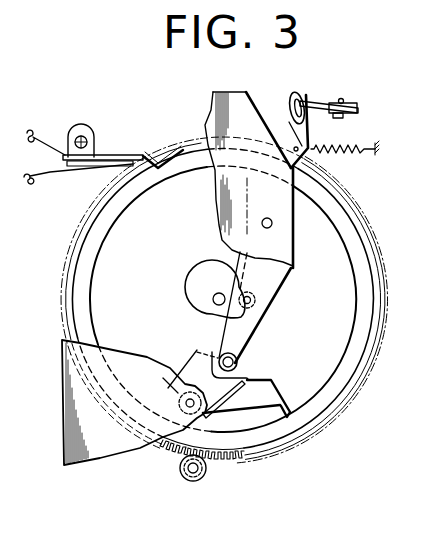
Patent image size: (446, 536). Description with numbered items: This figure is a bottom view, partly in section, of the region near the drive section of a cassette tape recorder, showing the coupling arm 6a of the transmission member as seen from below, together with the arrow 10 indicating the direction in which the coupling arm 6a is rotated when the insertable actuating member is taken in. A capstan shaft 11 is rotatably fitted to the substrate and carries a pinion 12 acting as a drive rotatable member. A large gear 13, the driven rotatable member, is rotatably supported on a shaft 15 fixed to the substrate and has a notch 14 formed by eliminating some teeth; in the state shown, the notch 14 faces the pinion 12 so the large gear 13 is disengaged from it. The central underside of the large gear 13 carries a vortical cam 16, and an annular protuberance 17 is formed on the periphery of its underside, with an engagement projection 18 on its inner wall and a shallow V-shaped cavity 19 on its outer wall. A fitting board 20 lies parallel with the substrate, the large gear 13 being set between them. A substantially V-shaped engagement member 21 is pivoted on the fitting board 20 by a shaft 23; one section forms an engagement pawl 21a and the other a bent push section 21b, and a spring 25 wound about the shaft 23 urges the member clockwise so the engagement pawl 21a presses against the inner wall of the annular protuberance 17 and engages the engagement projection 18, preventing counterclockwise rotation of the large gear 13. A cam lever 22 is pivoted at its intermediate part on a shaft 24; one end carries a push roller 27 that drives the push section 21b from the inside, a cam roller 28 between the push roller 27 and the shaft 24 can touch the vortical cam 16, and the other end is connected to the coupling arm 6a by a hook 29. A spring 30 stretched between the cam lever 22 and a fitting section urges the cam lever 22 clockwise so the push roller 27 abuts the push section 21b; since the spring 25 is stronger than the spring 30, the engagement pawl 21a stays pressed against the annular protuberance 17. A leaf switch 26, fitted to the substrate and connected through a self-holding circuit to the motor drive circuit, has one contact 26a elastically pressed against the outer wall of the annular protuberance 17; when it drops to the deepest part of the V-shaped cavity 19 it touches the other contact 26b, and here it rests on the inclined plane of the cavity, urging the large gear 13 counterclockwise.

The coupling arm 6a is at (358, 108).
The arrow 10 is at (348, 93).
The capstan shaft 11 is at (187, 481).
The pinion 12 is at (206, 480).
The large gear 13 is at (236, 460).
The notch 14 is at (178, 459).
The shaft 15 is at (219, 293).
The vortical cam 16 is at (186, 290).
The annular protuberance 17 is at (370, 259).
The engagement projection 18 is at (272, 410).
The V-shaped cavity 19 is at (205, 162).
The fitting board 20 is at (214, 96).
The engagement member 21 is at (250, 374).
The engagement pawl 21a is at (288, 397).
The push section 21b is at (216, 354).
The cam lever 22 is at (284, 279).
The shaft 23 is at (186, 403).
The shaft 24 is at (266, 218).
The spring 25 is at (232, 384).
The leaf switch 26 is at (118, 155).
The contact 26a is at (175, 152).
The contact 26b is at (106, 169).
The push roller 27 is at (240, 360).
The cam roller 28 is at (255, 303).
The hook 29 is at (343, 116).
The spring 30 is at (349, 151).